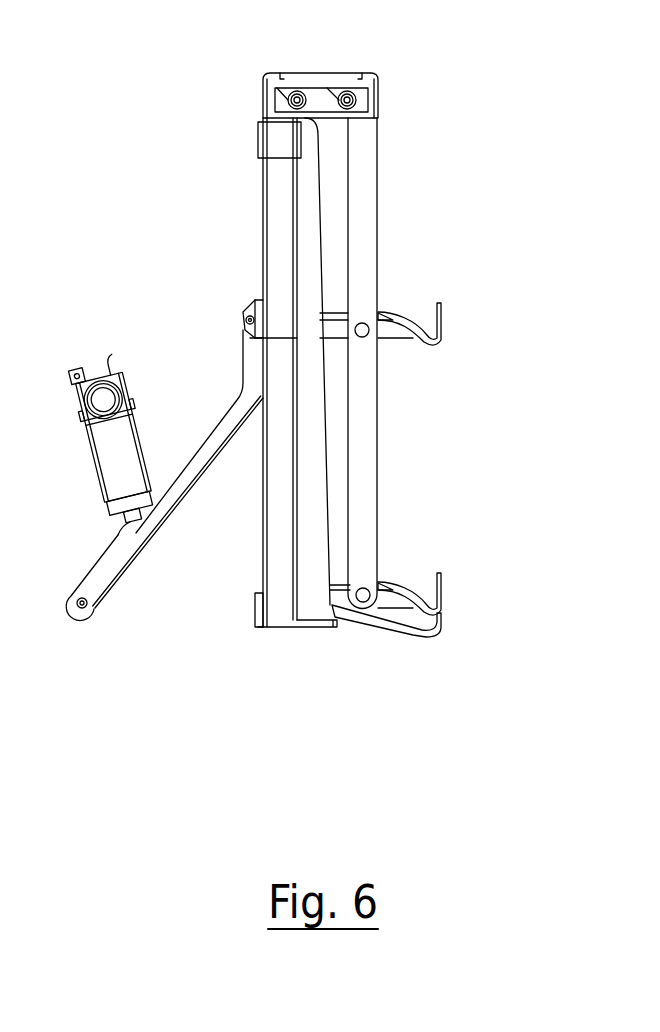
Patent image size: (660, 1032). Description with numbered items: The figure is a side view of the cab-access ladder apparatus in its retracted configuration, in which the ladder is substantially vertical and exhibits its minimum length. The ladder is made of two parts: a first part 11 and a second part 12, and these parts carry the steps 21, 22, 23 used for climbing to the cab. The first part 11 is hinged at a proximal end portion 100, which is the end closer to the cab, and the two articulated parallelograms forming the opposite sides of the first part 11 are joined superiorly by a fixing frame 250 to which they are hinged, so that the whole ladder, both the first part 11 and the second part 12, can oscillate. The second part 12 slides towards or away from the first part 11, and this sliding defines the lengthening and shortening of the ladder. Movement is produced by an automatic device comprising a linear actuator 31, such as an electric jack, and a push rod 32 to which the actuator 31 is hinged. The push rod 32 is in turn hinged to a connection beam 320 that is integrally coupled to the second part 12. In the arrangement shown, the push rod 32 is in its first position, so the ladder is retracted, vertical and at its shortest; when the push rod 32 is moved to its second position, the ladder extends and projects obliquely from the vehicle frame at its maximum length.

The proximal end portion 100 is at (425, 82).
The fixing frame 250 is at (268, 97).
The first part 11 is at (474, 307).
The second part 12 is at (274, 653).
The step 21 is at (387, 330).
The step 22 is at (392, 595).
The step 23 is at (383, 628).
The linear actuator 31 is at (122, 466).
The push rod 32 is at (157, 512).
The connection beam 320 is at (252, 303).